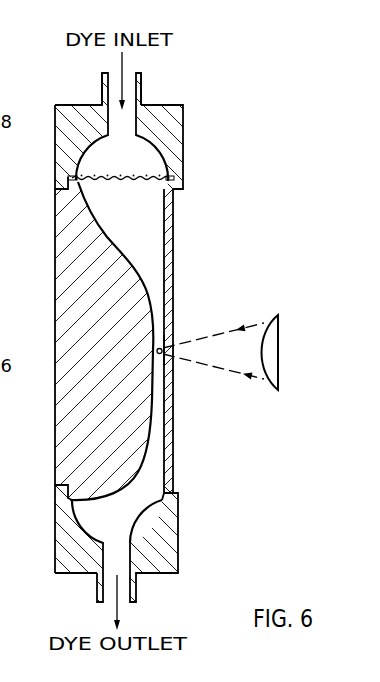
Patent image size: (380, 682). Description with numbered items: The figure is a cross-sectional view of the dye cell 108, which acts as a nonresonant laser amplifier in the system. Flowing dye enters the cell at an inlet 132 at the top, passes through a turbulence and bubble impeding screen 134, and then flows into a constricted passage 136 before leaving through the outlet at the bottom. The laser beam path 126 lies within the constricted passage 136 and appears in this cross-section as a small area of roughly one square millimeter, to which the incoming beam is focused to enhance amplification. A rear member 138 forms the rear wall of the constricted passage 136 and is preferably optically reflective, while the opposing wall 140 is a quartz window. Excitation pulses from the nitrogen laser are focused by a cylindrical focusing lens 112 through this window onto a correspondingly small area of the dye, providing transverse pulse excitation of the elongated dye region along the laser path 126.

The dye cell 108 is at (193, 157).
The cylindrical focusing lens 112 is at (279, 342).
The laser beam path 126 is at (162, 355).
The inlet 132 is at (141, 93).
The turbulence and bubble impeding screen 134 is at (105, 181).
The constricted passage 136 is at (166, 347).
The rear member 138 is at (68, 312).
The opposing wall 140 is at (170, 415).